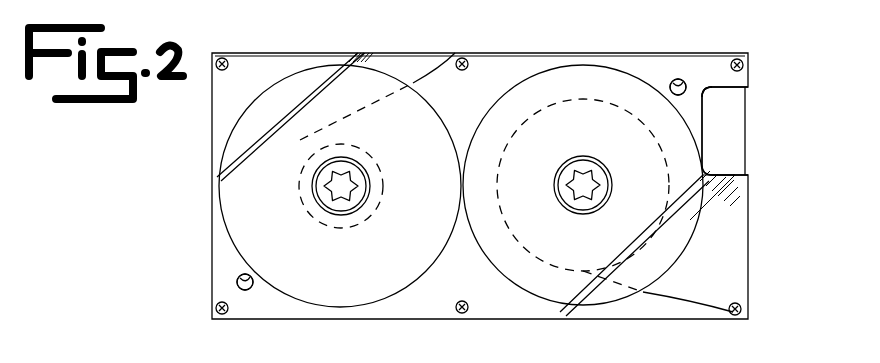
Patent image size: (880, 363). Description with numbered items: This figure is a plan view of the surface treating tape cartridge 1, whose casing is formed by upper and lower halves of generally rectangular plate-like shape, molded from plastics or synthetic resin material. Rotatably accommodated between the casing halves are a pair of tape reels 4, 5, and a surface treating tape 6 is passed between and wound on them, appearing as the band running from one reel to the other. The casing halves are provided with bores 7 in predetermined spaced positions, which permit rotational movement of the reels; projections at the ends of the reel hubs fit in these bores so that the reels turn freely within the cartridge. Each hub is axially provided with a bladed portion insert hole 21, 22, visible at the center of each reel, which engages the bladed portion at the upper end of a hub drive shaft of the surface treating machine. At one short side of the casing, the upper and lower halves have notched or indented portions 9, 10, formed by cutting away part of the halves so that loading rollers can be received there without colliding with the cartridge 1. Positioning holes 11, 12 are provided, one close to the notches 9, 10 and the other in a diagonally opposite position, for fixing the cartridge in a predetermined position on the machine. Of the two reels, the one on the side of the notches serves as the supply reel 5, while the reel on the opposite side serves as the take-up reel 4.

The surface treating tape cartridge 1 is at (658, 327).
The take-up reel 4 is at (343, 293).
The supply reel 5 is at (553, 287).
The surface treating tape 6 is at (748, 148).
The bore 7 is at (313, 196).
The notched portion 9 is at (745, 90).
The notched portion 10 is at (770, 101).
The positioning hole 11 is at (245, 291).
The positioning hole 12 is at (237, 340).
The bladed portion insert hole 21 is at (343, 168).
The bladed portion insert hole 22 is at (585, 168).